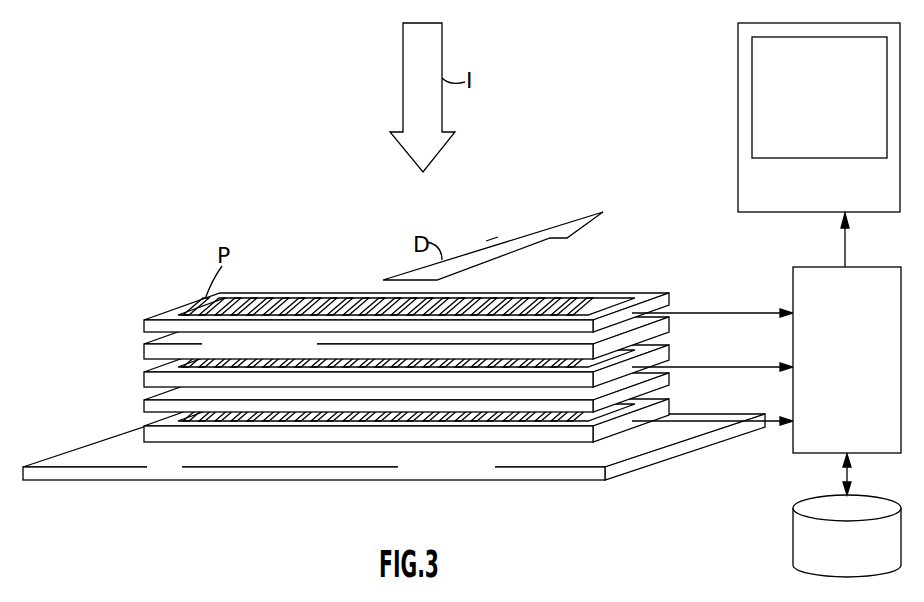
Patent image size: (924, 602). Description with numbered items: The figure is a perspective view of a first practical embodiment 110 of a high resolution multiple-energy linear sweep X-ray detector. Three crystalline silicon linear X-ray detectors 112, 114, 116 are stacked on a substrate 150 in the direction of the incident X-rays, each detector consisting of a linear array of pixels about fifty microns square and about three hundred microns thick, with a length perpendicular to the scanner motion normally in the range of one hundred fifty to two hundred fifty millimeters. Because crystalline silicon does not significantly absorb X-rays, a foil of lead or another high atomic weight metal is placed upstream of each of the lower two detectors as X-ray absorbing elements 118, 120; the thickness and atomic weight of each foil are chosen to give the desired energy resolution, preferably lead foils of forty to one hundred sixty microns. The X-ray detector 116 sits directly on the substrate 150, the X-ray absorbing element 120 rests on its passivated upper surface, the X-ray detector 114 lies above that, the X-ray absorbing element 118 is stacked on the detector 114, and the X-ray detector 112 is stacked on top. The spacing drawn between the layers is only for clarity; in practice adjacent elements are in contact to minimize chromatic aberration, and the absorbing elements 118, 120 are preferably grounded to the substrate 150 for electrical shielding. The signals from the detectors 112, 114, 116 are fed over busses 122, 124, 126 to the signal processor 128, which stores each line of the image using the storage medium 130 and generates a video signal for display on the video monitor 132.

The first practical embodiment of multiple-energy linear sweep X-ray detector 110 is at (357, 325).
The X-ray detector 112 is at (143, 325).
The X-ray detector 114 is at (143, 382).
The X-ray detector 116 is at (143, 435).
The X-ray absorbing element 118 is at (143, 352).
The X-ray absorbing element 120 is at (143, 408).
The bus 122 is at (737, 312).
The bus 124 is at (743, 366).
The bus 126 is at (735, 419).
The signal processor 128 is at (792, 453).
The storage medium 130 is at (793, 537).
The video monitor 132 is at (738, 118).
The substrate 150 is at (492, 482).